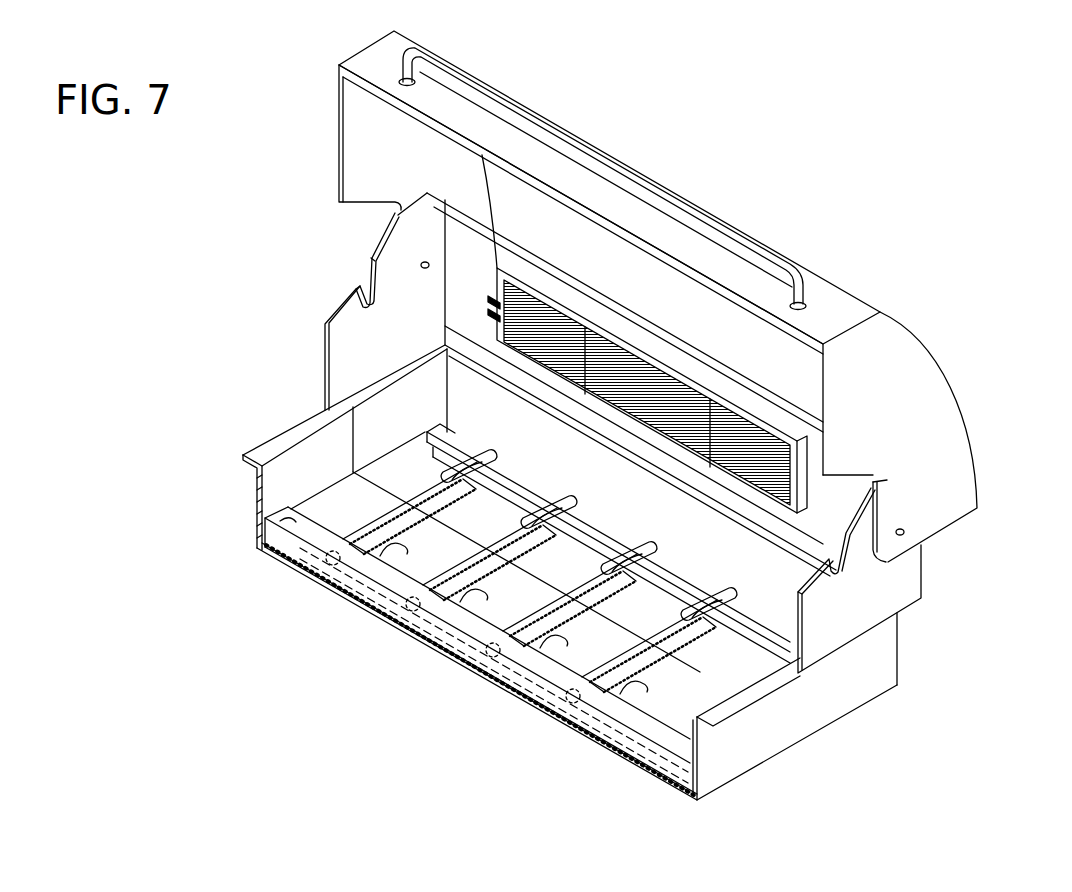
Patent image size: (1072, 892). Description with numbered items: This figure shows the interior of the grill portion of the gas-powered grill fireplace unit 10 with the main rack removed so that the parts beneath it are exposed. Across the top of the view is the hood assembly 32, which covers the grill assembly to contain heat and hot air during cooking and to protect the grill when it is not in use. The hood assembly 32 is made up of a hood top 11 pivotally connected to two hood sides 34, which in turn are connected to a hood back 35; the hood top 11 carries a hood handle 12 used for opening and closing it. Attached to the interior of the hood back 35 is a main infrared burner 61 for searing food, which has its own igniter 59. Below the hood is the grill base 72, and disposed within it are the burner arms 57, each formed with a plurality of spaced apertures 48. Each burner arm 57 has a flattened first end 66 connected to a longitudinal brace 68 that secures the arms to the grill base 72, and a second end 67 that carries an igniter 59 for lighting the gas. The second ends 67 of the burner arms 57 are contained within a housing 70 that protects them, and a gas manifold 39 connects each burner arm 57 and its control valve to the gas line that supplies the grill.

The grill fireplace unit 10 is at (208, 232).
The hood top 11 is at (843, 300).
The hood handle 12 is at (593, 157).
The hood assembly 32 is at (937, 352).
The hood side 34 is at (347, 340).
The hood back 35 is at (456, 247).
The gas manifold 39 is at (650, 747).
The spaced apertures 48 is at (462, 500).
The burner arm 57 is at (365, 527).
The igniter 59 is at (490, 296).
The main infrared burner 61 is at (657, 390).
The first end 66 is at (497, 463).
The second end 67 is at (320, 576).
The longitudinal brace 68 is at (514, 482).
The housing 70 is at (275, 530).
The grill base 72 is at (256, 484).